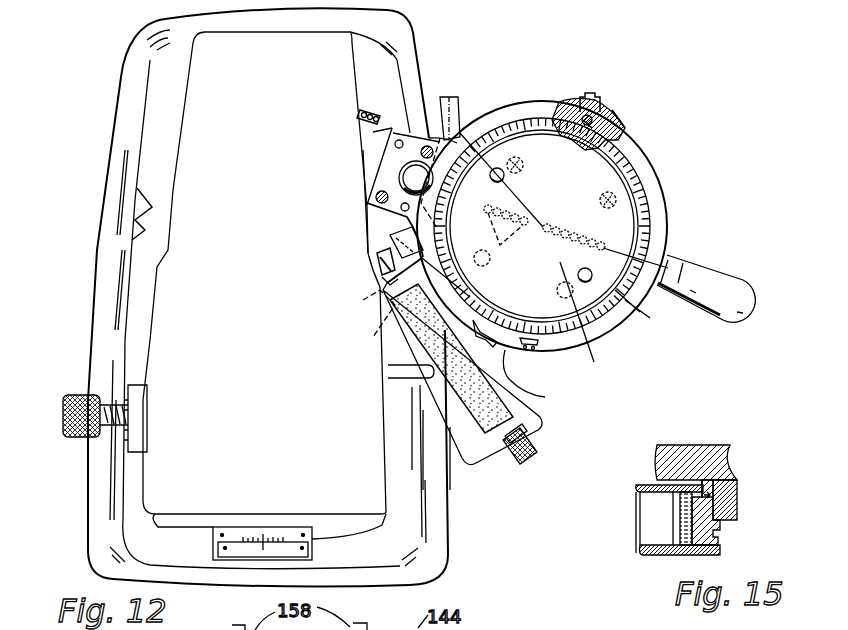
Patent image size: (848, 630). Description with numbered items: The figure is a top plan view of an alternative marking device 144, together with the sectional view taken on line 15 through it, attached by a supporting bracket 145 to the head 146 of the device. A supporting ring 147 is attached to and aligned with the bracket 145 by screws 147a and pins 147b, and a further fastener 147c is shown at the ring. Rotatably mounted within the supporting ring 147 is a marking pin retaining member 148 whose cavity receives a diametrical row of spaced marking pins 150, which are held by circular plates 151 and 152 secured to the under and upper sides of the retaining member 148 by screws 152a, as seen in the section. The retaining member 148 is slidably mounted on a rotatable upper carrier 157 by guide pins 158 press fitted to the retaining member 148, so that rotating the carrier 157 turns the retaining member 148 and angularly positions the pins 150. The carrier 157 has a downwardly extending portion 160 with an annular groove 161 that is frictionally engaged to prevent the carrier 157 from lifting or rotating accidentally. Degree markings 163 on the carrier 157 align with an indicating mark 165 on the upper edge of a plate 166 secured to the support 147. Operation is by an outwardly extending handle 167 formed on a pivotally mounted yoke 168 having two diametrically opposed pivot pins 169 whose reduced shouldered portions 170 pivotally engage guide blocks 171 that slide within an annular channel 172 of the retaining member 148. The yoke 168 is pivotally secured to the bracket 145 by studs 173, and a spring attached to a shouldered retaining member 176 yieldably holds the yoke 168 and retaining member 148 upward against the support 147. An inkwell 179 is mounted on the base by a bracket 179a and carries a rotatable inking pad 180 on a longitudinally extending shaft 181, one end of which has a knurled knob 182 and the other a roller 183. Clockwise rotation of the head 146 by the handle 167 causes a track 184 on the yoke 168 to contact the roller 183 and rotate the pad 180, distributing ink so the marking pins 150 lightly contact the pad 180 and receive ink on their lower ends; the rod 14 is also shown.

In FIG. 12, the rod 14 is at (452, 134).
In FIG. 12, the section line 15 is at (545, 275).
In FIG. 12, the marking device 144 is at (664, 174).
In FIG. 12, the supporting bracket 145 is at (377, 133).
In FIG. 12, the head 146 is at (330, 88).
In FIG. 12, the supporting ring 147 is at (665, 215).
In FIG. 15, the supporting ring 147 is at (733, 502).
In FIG. 12, the screws 147a is at (420, 154).
In FIG. 12, the pins 147b is at (395, 143).
In FIG. 12, the screw 147c is at (372, 230).
In FIG. 15, the marking pin retaining member 148 is at (717, 535).
In FIG. 12, the marking pins 150 is at (544, 233).
In FIG. 15, the circular plate 151 is at (653, 555).
In FIG. 15, the circular plate 152 is at (643, 485).
In FIG. 12, the screws 152a is at (600, 198).
In FIG. 15, the screws 152a is at (673, 540).
In FIG. 12, the carrier 157 is at (630, 223).
In FIG. 15, the carrier 157 is at (717, 463).
In FIG. 12, the guide pins 158 is at (491, 180).
In FIG. 15, the downwardly extending portion 160 is at (740, 493).
In FIG. 15, the annular groove 161 is at (737, 490).
In FIG. 12, the degree markings 163 is at (643, 308).
In FIG. 12, the indicating mark 165 is at (507, 333).
In FIG. 12, the plate 166 is at (553, 347).
In FIG. 12, the handle 167 is at (755, 308).
In FIG. 12, the yoke 168 is at (605, 125).
In FIG. 12, the pivot pins 169 is at (598, 110).
In FIG. 12, the reduced shouldered portion 170 is at (577, 140).
In FIG. 12, the guide blocks 171 is at (588, 96).
In FIG. 12, the annular channel 172 is at (630, 130).
In FIG. 15, the annular channel 172 is at (717, 543).
In FIG. 12, the studs 173 is at (370, 110).
In FIG. 12, the shouldered retaining member 176 is at (367, 212).
In FIG. 12, the inkwell 179 is at (477, 447).
In FIG. 12, the bracket 179a is at (414, 410).
In FIG. 12, the inking pad 180 is at (440, 398).
In FIG. 12, the shaft 181 is at (423, 257).
In FIG. 12, the knurled knob 182 is at (528, 450).
In FIG. 12, the roller 183 is at (378, 268).
In FIG. 12, the track 184 is at (452, 100).